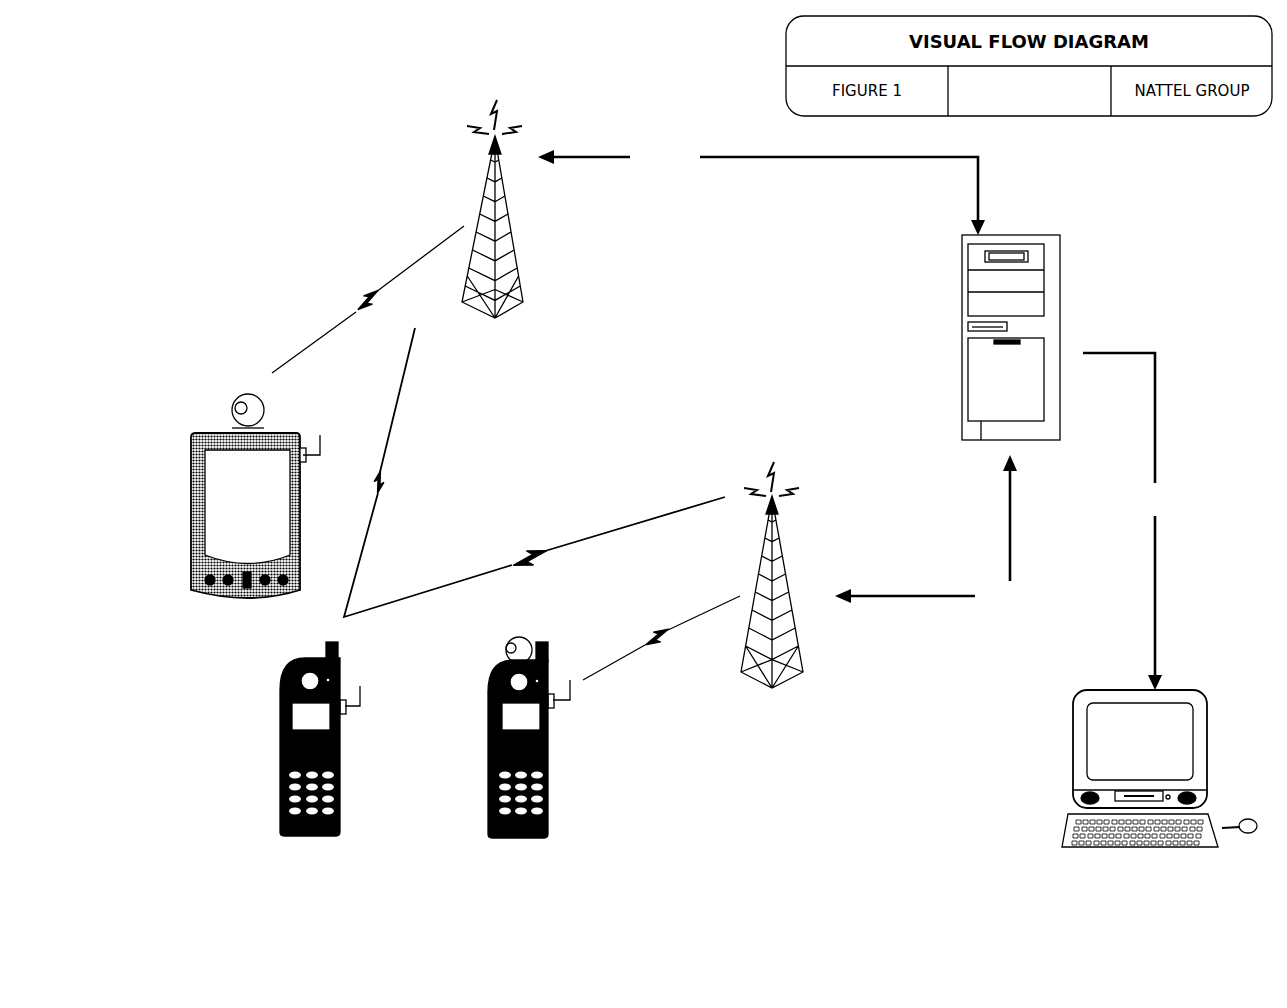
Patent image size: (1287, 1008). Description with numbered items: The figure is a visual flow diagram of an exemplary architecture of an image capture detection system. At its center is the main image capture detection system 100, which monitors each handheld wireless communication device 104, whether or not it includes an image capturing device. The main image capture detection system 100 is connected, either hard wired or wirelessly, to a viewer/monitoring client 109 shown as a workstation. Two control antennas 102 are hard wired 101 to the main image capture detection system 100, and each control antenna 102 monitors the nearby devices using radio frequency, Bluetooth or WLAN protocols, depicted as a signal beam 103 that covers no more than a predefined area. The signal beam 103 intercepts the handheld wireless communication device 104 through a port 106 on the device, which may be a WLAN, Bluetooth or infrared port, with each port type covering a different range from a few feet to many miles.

The main image capture detection system 100 is at (1032, 347).
The hard wire 101 is at (877, 415).
The control antenna 102 is at (644, 422).
The signal beam 103 is at (506, 458).
The handheld wireless communication device 104 is at (401, 620).
The port 106 is at (324, 437).
The viewer/monitoring client 109 is at (1159, 768).